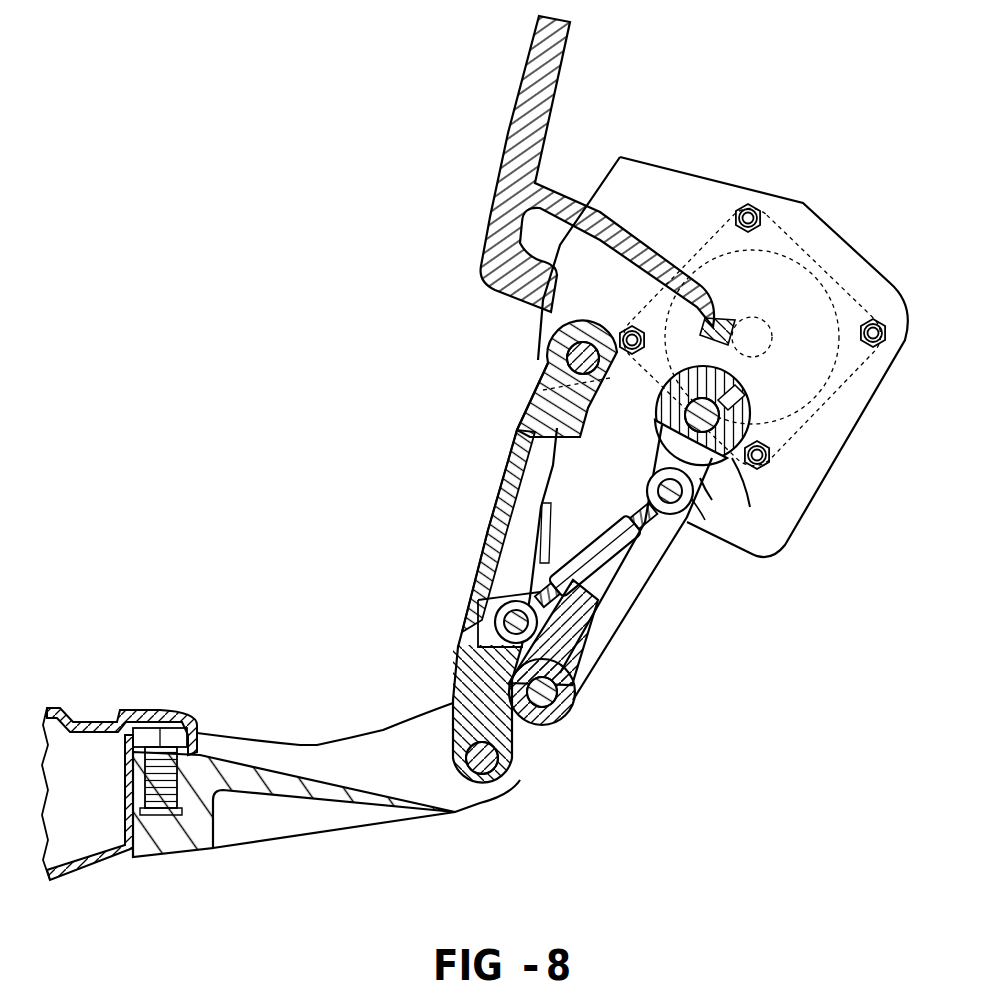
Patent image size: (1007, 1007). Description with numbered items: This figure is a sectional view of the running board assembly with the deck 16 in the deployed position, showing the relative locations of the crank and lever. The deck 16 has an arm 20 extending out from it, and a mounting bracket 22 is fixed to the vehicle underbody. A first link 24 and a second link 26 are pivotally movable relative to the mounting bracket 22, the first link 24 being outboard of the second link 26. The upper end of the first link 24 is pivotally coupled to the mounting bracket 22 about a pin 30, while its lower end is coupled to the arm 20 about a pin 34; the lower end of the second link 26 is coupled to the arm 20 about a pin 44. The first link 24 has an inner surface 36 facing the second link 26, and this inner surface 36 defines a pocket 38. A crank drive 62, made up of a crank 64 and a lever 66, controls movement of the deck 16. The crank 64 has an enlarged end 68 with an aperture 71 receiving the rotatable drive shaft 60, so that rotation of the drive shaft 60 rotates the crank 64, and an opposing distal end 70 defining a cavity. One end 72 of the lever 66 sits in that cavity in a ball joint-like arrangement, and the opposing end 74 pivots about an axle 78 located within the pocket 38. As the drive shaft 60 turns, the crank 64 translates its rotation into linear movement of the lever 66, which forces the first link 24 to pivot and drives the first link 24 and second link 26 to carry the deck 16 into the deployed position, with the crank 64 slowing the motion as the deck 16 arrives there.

The deck 16 is at (97, 710).
The arm 20 is at (327, 740).
The mounting bracket 22 is at (508, 133).
The first link 24 is at (483, 547).
The second link 26 is at (627, 617).
The pin 30 is at (560, 337).
The pin 34 is at (503, 767).
The inner surface 36 is at (582, 437).
The pocket 38 is at (512, 500).
The pin 44 is at (563, 703).
The drive shaft 60 is at (665, 365).
The crank drive 62 is at (652, 526).
The crank 64 is at (750, 507).
The lever 66 is at (626, 572).
The enlarged end 68 is at (743, 407).
The distal end 70 is at (650, 480).
The aperture 71 is at (697, 497).
The end 72 is at (670, 474).
The opposing end 74 is at (508, 603).
The axle 78 is at (504, 620).